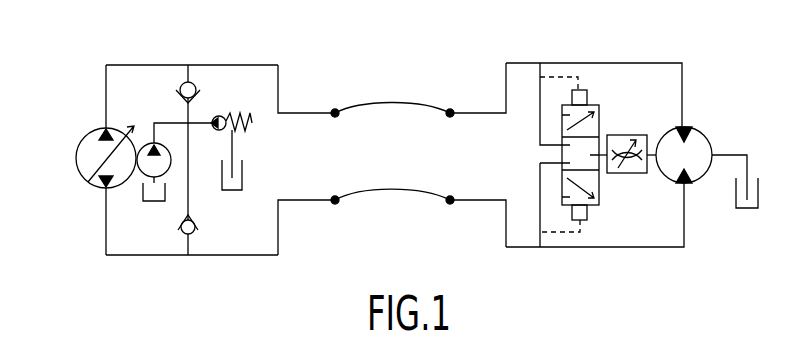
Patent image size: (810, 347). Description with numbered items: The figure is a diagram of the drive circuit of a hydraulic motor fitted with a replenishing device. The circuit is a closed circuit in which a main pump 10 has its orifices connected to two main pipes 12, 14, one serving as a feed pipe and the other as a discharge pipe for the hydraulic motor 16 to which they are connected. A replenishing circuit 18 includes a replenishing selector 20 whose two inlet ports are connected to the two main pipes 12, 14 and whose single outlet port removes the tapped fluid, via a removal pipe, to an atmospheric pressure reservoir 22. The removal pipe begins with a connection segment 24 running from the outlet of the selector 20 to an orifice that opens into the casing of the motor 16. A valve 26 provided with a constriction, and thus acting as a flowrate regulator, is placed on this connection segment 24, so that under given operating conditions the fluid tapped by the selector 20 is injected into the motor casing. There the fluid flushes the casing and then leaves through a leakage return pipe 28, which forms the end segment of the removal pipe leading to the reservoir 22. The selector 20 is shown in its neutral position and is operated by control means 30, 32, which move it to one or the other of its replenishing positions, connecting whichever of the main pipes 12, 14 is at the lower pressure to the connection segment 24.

The main pump 10 is at (76, 170).
The main pipe 12 is at (143, 63).
The main pipe 14 is at (145, 257).
The hydraulic motor 16 is at (704, 128).
The replenishing circuit 18 is at (495, 152).
The replenishing selector 20 is at (597, 92).
The atmospheric pressure reservoir 22 is at (758, 202).
The connection segment 24 is at (600, 158).
The valve 26 is at (634, 138).
The leakage return pipe 28 is at (726, 153).
The control means 30 is at (552, 77).
The control means 32 is at (565, 232).